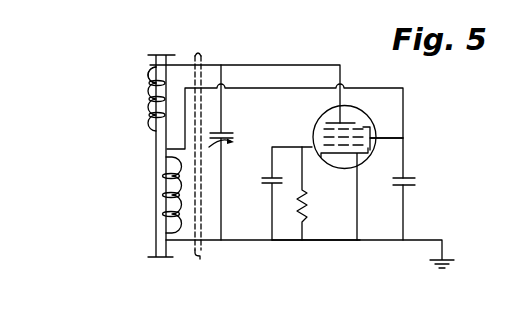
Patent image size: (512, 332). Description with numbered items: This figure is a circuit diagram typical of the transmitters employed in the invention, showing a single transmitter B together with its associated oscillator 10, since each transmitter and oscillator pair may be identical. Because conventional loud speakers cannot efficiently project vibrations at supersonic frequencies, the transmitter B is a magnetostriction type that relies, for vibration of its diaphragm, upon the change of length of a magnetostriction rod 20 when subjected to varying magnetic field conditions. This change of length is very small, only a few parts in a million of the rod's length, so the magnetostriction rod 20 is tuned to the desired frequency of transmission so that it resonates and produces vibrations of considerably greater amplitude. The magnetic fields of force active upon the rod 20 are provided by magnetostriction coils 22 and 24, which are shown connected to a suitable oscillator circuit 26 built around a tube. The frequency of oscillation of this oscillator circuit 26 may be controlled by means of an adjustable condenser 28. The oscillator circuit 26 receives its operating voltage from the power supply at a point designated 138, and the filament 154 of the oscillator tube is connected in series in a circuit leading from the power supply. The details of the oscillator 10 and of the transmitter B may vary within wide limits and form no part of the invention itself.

The oscillator 10 is at (304, 252).
The magnetostriction rod 20 is at (203, 53).
The magnetostriction coil 22 is at (148, 107).
The magnetostriction coil 24 is at (165, 195).
The oscillator circuit 26 is at (388, 111).
The adjustable condenser 28 is at (241, 140).
The voltage supply point 138 is at (428, 138).
The filament 154 is at (344, 158).
The transmitter B is at (138, 75).